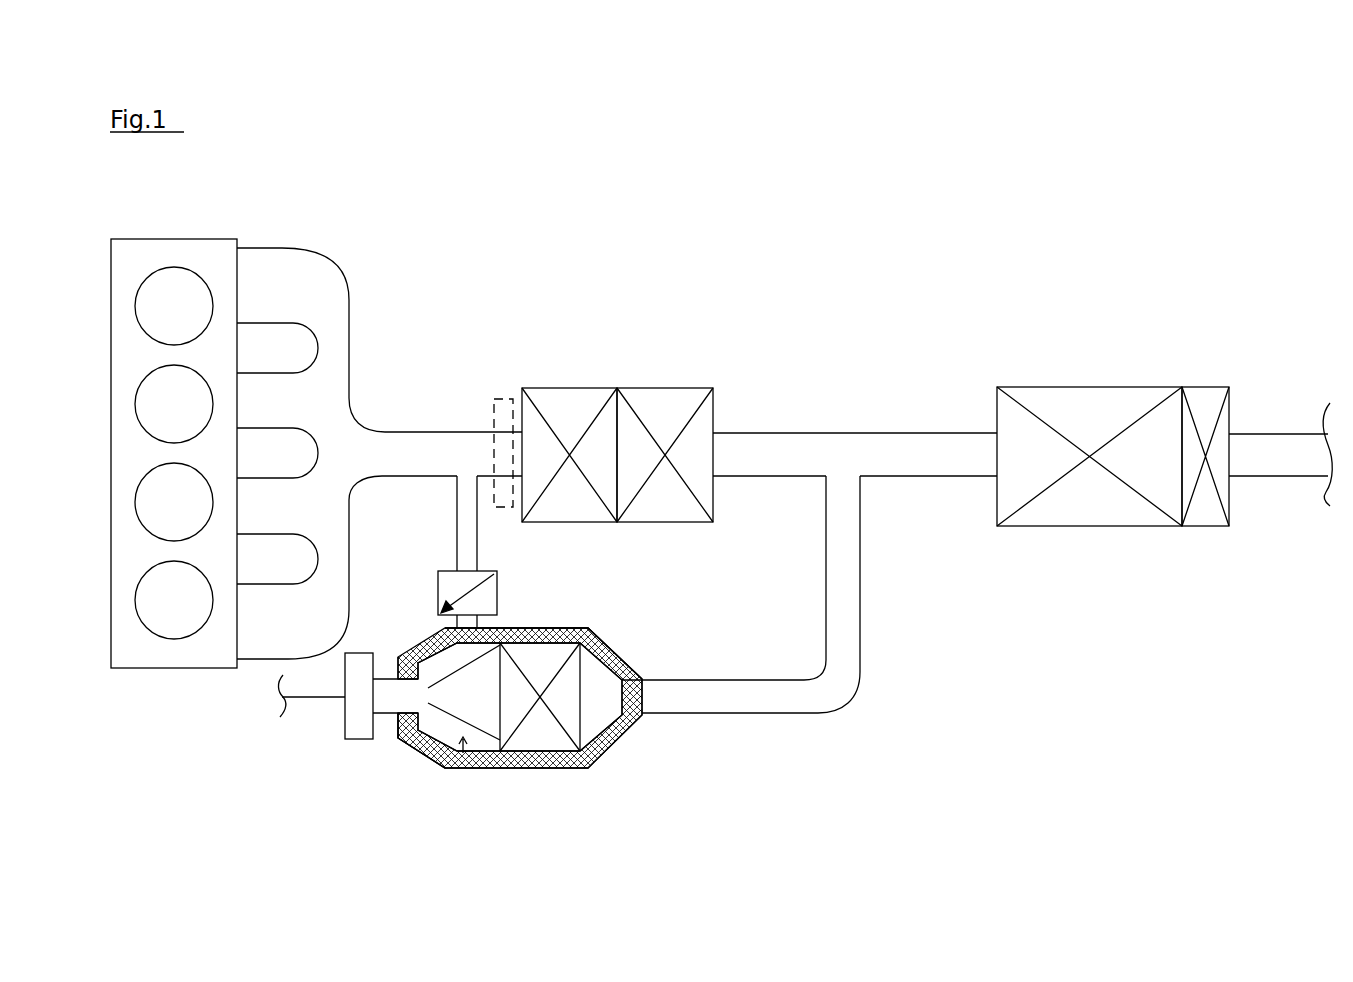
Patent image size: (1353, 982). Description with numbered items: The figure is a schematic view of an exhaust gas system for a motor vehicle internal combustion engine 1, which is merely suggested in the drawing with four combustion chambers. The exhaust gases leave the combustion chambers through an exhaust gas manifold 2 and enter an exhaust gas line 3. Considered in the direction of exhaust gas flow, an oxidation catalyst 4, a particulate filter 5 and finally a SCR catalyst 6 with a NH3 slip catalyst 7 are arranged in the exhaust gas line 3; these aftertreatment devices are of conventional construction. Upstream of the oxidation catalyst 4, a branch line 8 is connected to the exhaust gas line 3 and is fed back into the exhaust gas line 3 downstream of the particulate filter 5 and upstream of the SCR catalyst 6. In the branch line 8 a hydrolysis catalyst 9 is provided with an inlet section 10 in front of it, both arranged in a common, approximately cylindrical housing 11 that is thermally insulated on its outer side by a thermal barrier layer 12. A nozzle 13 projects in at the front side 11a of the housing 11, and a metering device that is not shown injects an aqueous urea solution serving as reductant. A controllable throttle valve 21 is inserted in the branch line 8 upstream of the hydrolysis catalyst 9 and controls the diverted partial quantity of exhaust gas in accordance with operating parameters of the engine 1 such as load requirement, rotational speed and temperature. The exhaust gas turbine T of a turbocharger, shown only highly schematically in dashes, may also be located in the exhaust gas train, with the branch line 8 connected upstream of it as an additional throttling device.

The internal combustion engine 1 is at (180, 239).
The exhaust gas manifold 2 is at (338, 256).
The exhaust gas line 3 is at (446, 432).
The exhaust gas turbine T is at (498, 399).
The oxidation catalyst 4 is at (571, 388).
The particulate filter 5 is at (667, 388).
The SCR catalyst 6 is at (1090, 387).
The NH3 slip catalyst 7 is at (1205, 387).
The branch line 8 is at (457, 512).
The hydrolysis catalyst 9 is at (537, 740).
The inlet section 10 is at (446, 768).
The housing 11 is at (618, 657).
The front side of the housing 11a is at (405, 708).
The thermal barrier layer 12 is at (572, 628).
The nozzle 13 is at (365, 653).
The controllable throttle valve 21 is at (497, 571).